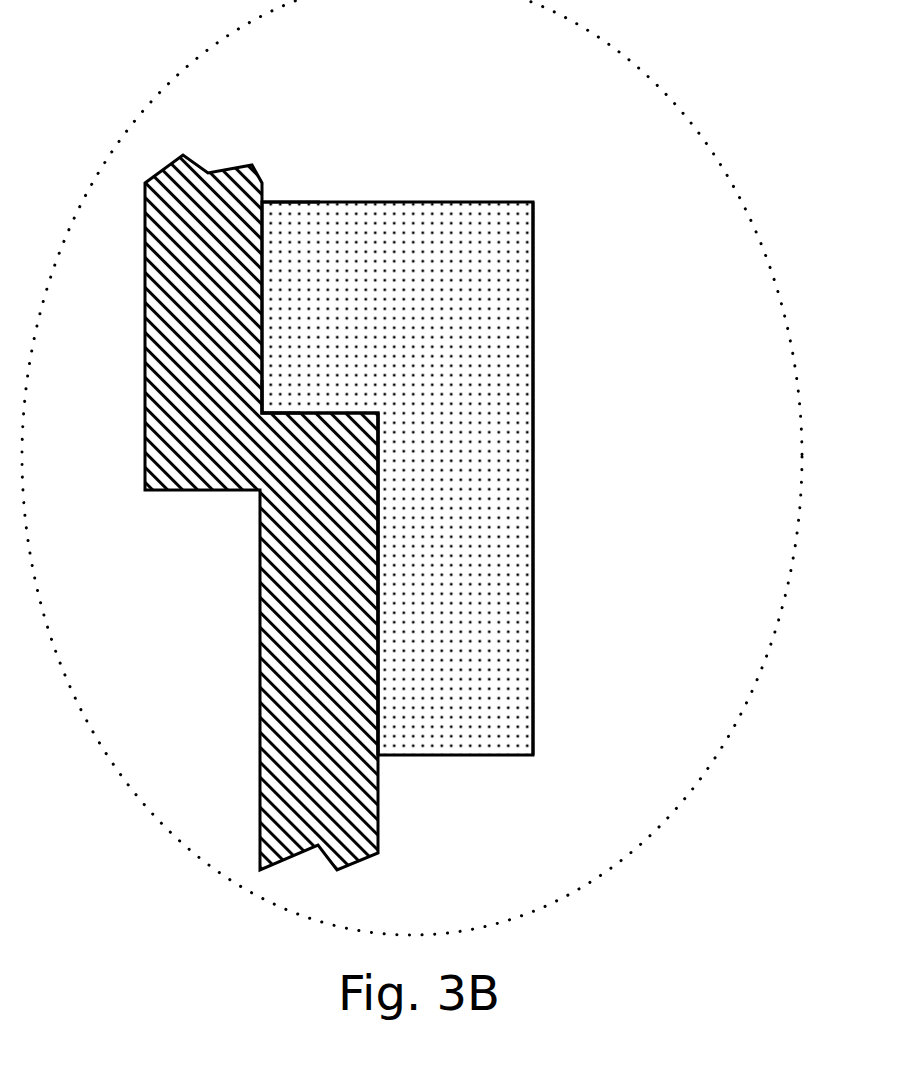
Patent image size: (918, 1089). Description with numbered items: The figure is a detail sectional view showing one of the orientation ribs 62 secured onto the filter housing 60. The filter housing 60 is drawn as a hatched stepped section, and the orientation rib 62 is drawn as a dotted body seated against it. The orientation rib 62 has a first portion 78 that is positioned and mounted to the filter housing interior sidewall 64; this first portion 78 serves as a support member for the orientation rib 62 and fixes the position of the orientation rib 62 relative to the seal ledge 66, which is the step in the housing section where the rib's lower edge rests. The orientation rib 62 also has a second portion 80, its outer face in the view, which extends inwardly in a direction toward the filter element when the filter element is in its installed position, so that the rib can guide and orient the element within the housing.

The filter housing 60 is at (328, 460).
The orientation rib 62 is at (467, 418).
The filter housing interior sidewall 64 is at (378, 633).
The seal ledge 66 is at (311, 413).
The first portion 78 is at (288, 262).
The second portion 80 is at (533, 268).